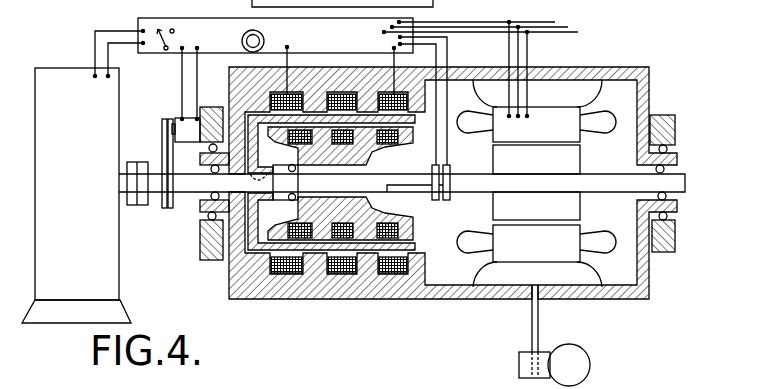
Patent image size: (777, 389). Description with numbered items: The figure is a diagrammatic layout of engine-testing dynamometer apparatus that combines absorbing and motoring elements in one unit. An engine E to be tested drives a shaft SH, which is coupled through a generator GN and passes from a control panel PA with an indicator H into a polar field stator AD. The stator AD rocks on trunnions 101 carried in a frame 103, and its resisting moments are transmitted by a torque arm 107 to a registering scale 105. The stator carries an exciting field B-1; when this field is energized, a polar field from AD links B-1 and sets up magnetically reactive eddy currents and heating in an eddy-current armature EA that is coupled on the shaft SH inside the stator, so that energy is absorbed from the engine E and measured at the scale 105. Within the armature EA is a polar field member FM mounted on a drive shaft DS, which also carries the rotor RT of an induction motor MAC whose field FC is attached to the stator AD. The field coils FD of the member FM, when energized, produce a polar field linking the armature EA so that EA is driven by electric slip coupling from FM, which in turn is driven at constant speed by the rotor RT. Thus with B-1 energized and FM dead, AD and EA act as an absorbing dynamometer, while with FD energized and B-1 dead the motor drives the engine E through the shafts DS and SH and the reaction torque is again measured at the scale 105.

The engine E is at (45, 162).
The control panel PA is at (266, 36).
The indicator H is at (242, 42).
The generator GN is at (181, 127).
The driven shaft SH is at (178, 194).
The induction motor MAC is at (553, 87).
The polar field stator AD is at (312, 290).
The exciting field B-1 is at (395, 273).
The eddy-current armature EA is at (412, 247).
The polar field member FM is at (367, 152).
The field coils FD is at (410, 230).
The drive shaft DS is at (458, 184).
The field of motor FC is at (563, 122).
The rotor RT is at (568, 160).
The trunnions 101 is at (188, 203).
The frame 103 is at (208, 262).
The torque arm 107 is at (533, 327).
The registering scale 105 is at (570, 358).